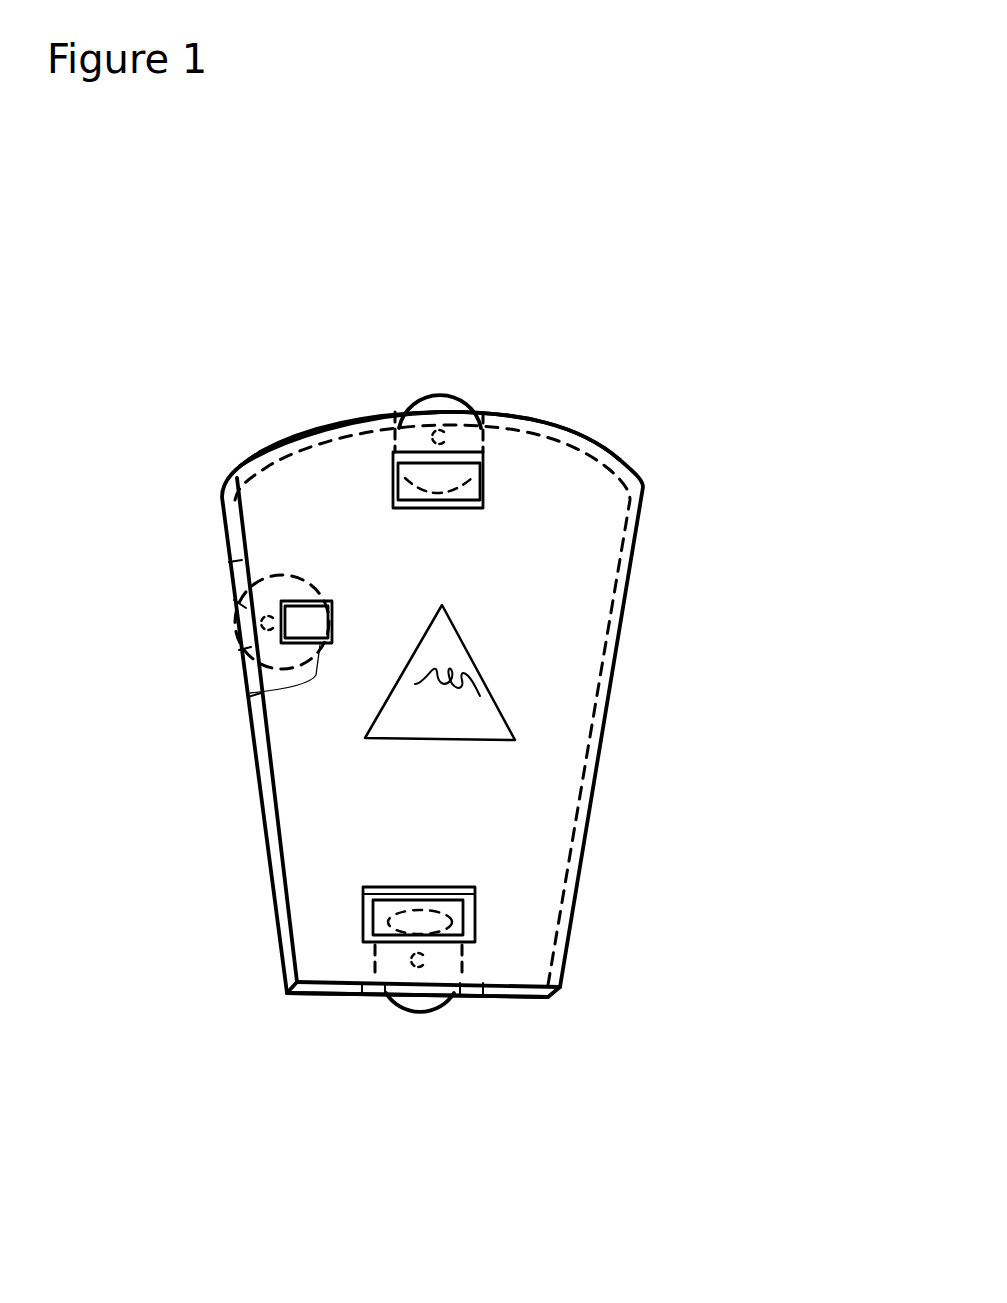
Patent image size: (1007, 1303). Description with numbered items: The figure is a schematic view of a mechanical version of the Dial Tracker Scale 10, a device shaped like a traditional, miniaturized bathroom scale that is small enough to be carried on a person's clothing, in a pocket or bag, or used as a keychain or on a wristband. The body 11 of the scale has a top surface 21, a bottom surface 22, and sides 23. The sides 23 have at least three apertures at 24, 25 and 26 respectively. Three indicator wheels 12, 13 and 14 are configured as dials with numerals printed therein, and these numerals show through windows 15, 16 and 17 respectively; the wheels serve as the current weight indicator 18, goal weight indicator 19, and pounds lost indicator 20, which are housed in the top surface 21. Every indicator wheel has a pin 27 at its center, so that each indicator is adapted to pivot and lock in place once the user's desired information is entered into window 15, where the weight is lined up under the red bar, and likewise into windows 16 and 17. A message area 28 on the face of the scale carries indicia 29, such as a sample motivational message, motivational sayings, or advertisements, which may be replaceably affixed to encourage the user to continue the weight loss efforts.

The container 10 is at (303, 108).
The container body 11 is at (590, 834).
The indicator wheel 12 is at (437, 1008).
The indicator wheel 13 is at (262, 622).
The indicator wheel 14 is at (483, 428).
The window 15 is at (380, 915).
The window 16 is at (297, 600).
The window 17 is at (433, 474).
The current weight indicator 18 is at (463, 913).
The goal weight indicator 19 is at (262, 712).
The pounds lost indicator 20 is at (490, 488).
The top surface 21 is at (540, 767).
The bottom surface 22 is at (620, 540).
The sides 23 is at (277, 868).
The aperture 24 is at (478, 1000).
The aperture 25 is at (398, 430).
The aperture 26 is at (243, 676).
The pin 27 is at (433, 427).
The label triangle 28 is at (505, 727).
The indicia 29 is at (470, 694).